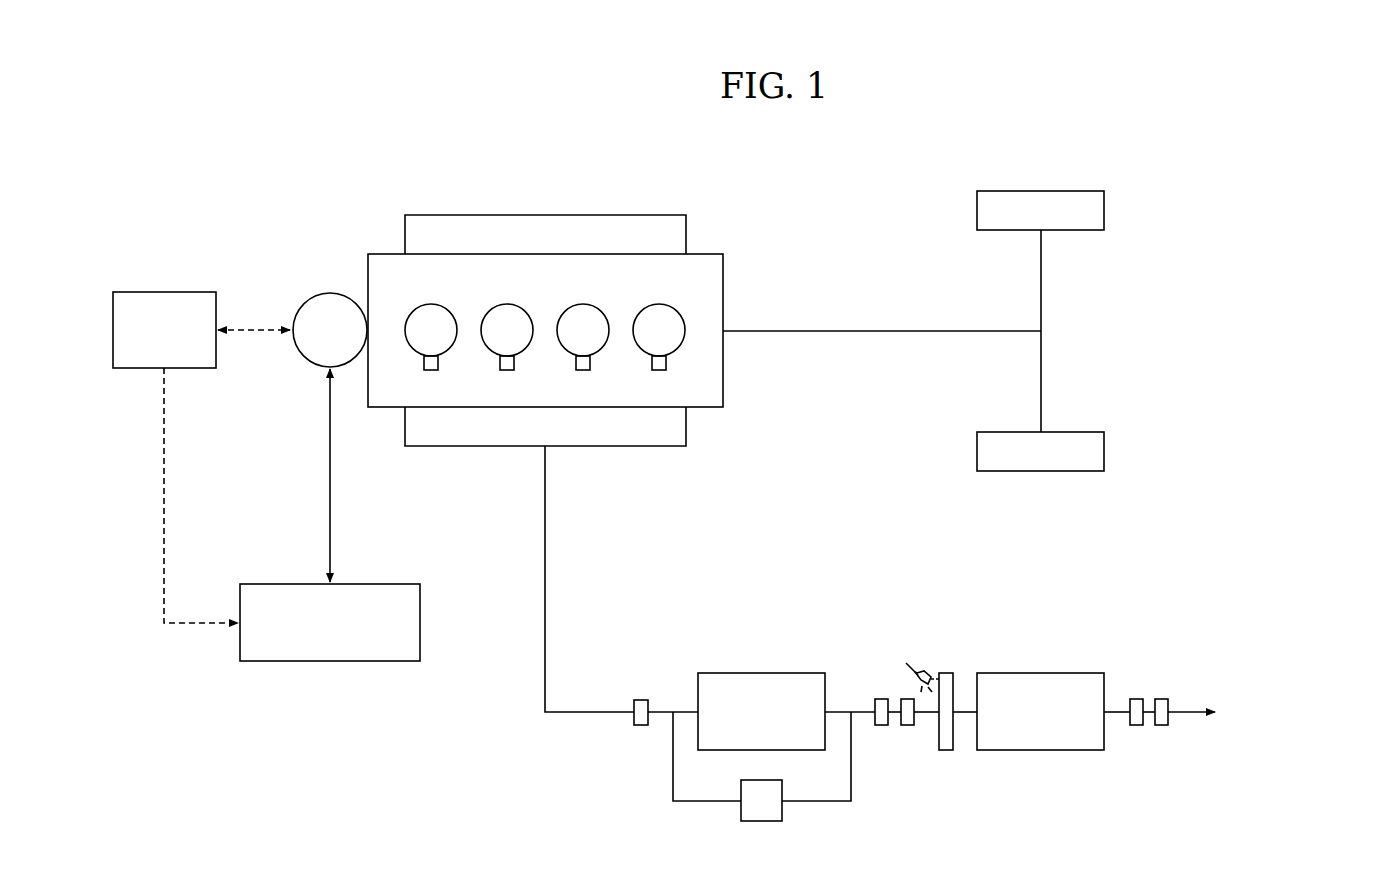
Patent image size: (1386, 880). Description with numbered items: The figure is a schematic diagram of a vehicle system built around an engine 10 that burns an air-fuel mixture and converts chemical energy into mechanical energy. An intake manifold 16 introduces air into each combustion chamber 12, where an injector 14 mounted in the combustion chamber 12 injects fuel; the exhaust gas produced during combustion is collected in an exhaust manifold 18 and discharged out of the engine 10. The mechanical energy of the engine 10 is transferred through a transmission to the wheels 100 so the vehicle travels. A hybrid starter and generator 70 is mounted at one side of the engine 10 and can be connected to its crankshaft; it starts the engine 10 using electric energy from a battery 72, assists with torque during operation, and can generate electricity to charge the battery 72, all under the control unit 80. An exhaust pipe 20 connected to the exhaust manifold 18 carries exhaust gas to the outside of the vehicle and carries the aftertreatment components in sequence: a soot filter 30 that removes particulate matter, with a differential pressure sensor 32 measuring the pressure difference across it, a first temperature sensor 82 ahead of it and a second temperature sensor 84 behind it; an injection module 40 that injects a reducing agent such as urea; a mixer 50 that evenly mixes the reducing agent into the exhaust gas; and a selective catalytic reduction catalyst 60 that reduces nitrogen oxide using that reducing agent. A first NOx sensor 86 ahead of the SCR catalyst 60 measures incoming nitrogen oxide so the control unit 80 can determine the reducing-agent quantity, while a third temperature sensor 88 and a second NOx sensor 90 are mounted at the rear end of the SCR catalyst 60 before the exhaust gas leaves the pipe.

The engine 10 is at (496, 186).
The combustion chamber 12 is at (409, 312).
The injector 14 is at (431, 371).
The intake manifold 16 is at (600, 215).
The exhaust manifold 18 is at (470, 447).
The exhaust pipe 20 is at (546, 556).
The soot filter 30 is at (762, 673).
The differential pressure sensor 32 is at (761, 822).
The injection module 40 is at (908, 663).
The mixer 50 is at (944, 673).
The selective catalytic reduction catalyst 60 is at (1040, 673).
The hybrid starter and generator 70 is at (320, 297).
The battery 72 is at (330, 662).
The control unit 80 is at (166, 292).
The first temperature sensor 82 is at (641, 726).
The second temperature sensor 84 is at (881, 726).
The first NOx sensor 86 is at (908, 726).
The third temperature sensor 88 is at (1137, 726).
The second NOx sensor 90 is at (1162, 726).
The wheels 100 is at (1076, 191).